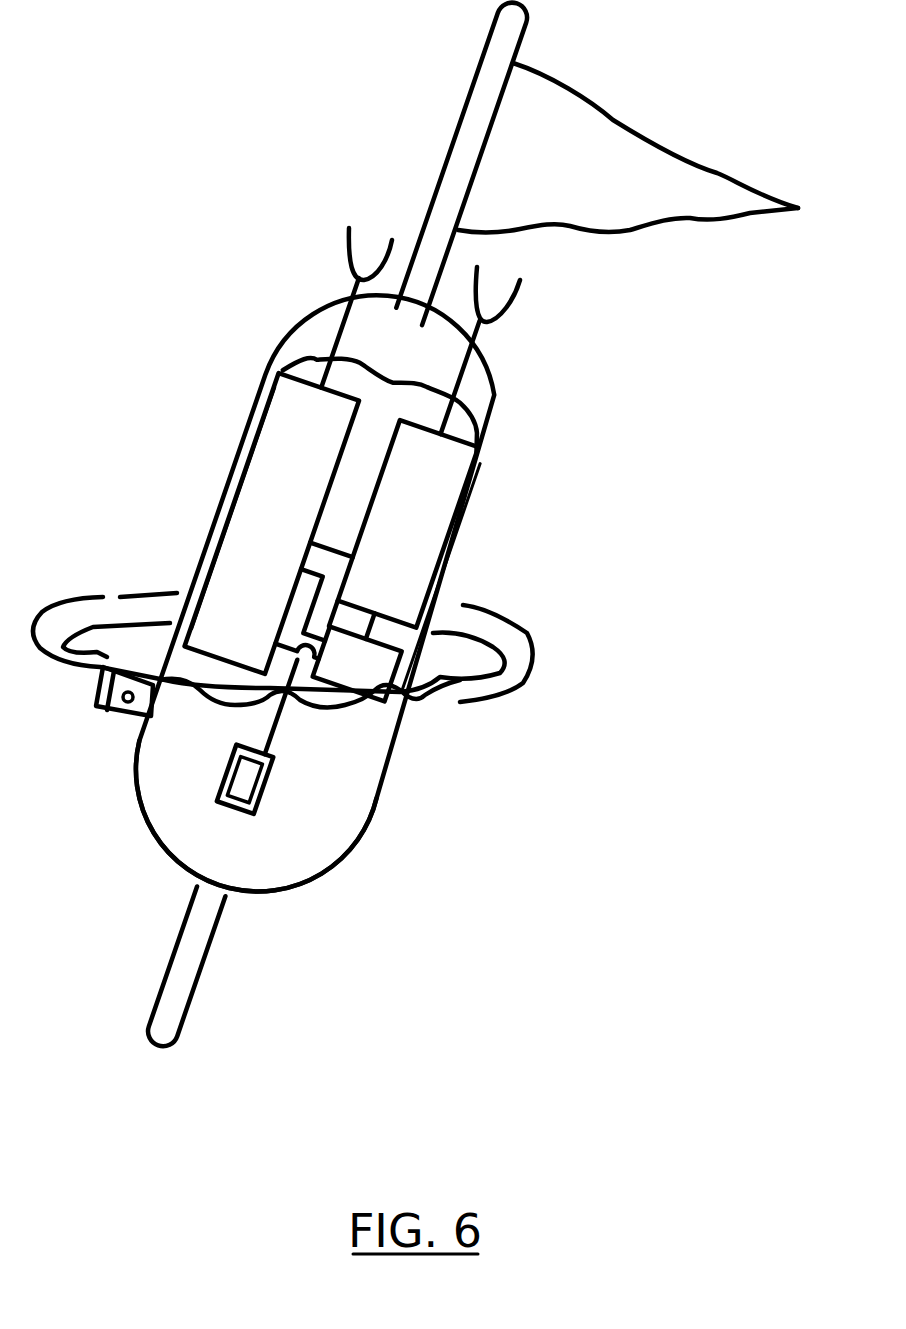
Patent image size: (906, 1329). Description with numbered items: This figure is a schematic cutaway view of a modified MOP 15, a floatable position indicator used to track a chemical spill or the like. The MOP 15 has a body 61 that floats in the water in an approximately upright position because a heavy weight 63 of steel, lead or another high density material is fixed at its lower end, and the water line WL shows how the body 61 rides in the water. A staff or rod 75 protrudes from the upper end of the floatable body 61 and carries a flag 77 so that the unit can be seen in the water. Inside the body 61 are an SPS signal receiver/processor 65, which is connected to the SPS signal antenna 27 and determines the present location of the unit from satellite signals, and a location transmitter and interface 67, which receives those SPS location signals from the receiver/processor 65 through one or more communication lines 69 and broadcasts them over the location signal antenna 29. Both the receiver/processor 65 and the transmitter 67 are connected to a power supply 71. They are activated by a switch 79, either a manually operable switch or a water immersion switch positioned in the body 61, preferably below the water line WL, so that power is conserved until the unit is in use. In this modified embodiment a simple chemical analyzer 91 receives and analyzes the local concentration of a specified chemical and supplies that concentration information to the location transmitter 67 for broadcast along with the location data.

The MOP 15 is at (572, 432).
The SPS signal antenna 27 is at (343, 248).
The location signal antenna 29 is at (508, 312).
The body 61 is at (320, 827).
The heavy weight 63 is at (182, 996).
The SPS signal receiver/processor 65 is at (265, 535).
The location transmitter and interface 67 is at (413, 557).
The communication lines 69 is at (340, 560).
The power supply 71 is at (383, 703).
The staff or rod 75 is at (465, 160).
The flag 77 is at (586, 145).
The switch 79 is at (242, 795).
The chemical analyzer 91 is at (125, 722).
The water line WL is at (505, 663).